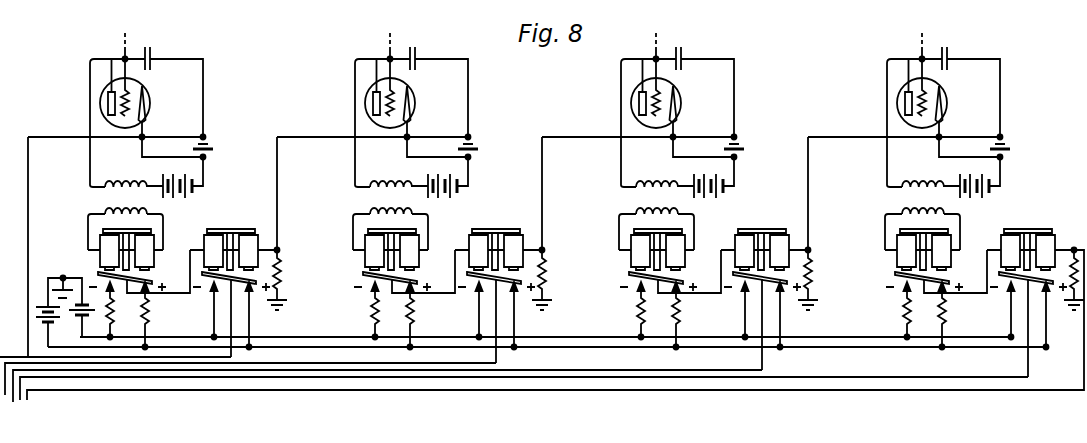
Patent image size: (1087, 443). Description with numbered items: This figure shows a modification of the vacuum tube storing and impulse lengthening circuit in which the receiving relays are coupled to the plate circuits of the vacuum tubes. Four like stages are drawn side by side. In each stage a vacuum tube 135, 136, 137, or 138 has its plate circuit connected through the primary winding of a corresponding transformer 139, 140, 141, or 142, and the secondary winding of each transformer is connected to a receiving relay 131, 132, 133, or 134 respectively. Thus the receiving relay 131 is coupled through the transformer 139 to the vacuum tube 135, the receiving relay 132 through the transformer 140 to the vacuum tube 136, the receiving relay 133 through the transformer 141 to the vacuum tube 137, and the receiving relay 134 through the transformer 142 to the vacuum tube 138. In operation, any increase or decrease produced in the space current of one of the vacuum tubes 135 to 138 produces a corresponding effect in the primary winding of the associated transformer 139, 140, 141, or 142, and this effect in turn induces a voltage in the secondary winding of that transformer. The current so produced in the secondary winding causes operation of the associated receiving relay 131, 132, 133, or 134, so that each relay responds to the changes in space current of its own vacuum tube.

The receiving relay 131 is at (100, 251).
The receiving relay 132 is at (367, 256).
The receiving relay 133 is at (632, 257).
The receiving relay 134 is at (898, 258).
The vacuum tube 135 is at (148, 100).
The vacuum tube 136 is at (412, 98).
The vacuum tube 137 is at (675, 103).
The vacuum tube 138 is at (942, 103).
The transformer 139 is at (105, 195).
The transformer 140 is at (372, 191).
The transformer 141 is at (630, 193).
The transformer 142 is at (898, 199).